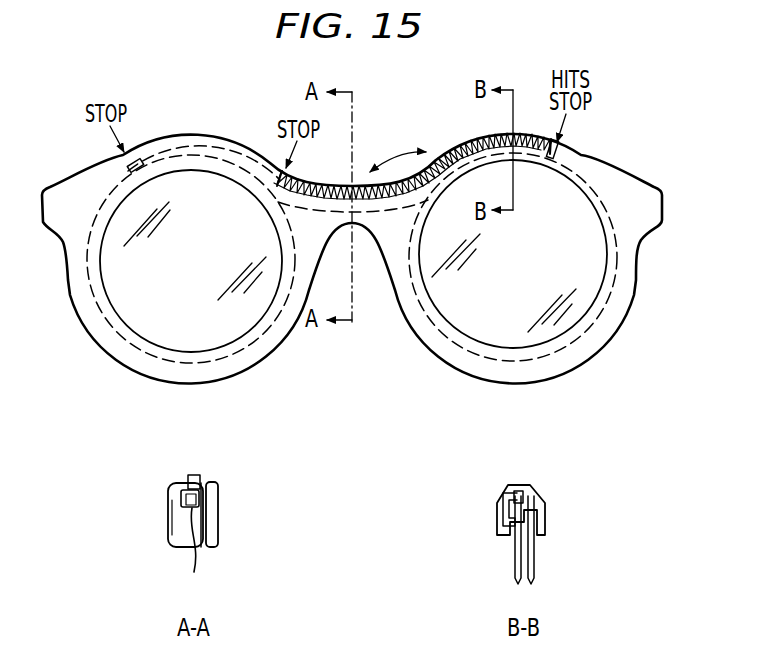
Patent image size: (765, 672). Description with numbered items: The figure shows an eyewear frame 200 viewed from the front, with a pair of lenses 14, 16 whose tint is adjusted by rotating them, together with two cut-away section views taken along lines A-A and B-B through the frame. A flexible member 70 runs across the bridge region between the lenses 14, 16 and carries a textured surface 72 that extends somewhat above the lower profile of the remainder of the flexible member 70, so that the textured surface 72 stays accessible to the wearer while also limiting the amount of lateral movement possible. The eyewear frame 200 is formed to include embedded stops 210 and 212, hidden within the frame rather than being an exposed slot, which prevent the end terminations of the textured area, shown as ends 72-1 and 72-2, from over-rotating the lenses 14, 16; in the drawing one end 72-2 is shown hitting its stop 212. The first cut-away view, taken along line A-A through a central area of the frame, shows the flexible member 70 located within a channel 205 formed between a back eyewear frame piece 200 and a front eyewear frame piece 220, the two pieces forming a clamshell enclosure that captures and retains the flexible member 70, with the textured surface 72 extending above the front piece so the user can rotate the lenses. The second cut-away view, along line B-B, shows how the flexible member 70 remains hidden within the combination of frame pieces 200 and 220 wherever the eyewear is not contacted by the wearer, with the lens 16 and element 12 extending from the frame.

The eyewear lens 12 is at (536, 556).
The lens 14 is at (115, 270).
The lens 16 is at (470, 318).
The flexible member 70 is at (183, 497).
The textured surface 72 is at (453, 150).
The end of textured area 72-1 is at (282, 174).
The end of textured area 72-2 is at (553, 160).
The eyewear frame 200 is at (643, 195).
The channel 205 is at (195, 555).
The embedded stop 210 is at (128, 166).
The embedded stop 212 is at (556, 152).
The front eyewear frame piece 220 is at (176, 523).